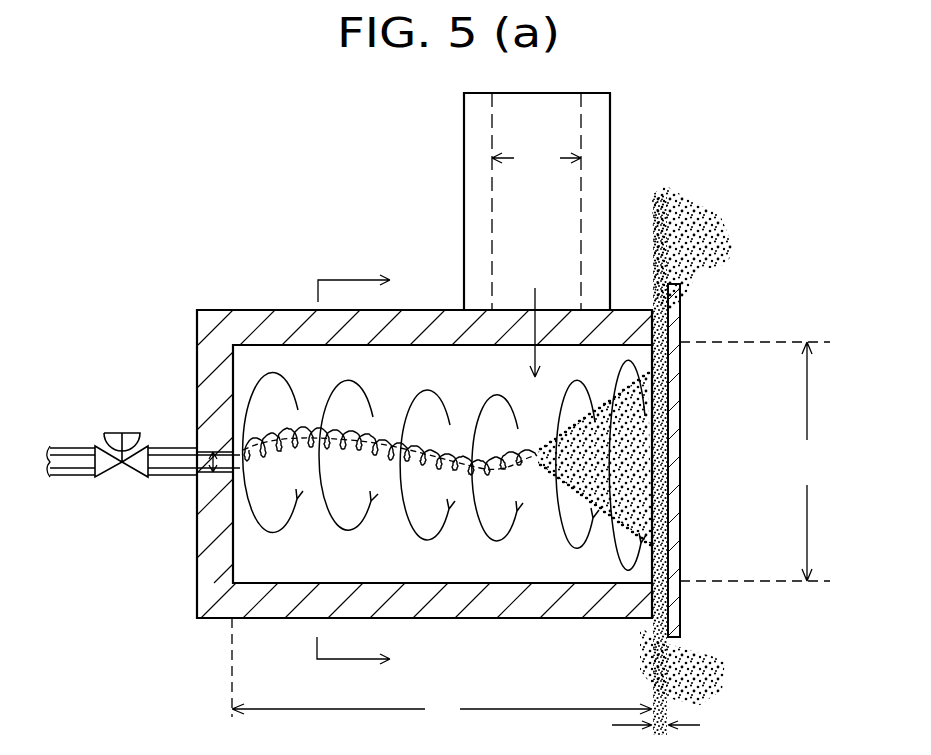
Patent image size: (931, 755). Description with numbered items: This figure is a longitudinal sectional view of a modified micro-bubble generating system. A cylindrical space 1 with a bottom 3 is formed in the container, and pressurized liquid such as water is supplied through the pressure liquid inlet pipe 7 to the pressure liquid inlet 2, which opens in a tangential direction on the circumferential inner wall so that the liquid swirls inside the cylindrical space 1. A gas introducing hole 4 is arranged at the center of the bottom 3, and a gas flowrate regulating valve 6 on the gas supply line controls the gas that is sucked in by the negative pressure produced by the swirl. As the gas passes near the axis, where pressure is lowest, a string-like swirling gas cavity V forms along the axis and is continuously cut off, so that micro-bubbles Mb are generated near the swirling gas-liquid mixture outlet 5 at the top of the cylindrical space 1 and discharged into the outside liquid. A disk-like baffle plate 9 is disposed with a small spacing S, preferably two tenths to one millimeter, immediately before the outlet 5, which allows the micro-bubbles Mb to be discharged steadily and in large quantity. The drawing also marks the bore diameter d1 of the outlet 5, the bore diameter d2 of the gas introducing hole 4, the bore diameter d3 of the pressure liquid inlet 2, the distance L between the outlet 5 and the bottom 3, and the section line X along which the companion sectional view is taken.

The cylindrical space 1 is at (269, 358).
The pressure liquid inlet 2 is at (560, 336).
The bottom of cylindrical space 3 is at (228, 565).
The gas introducing hole 4 is at (232, 472).
The swirling gas-liquid mixture outlet 5 is at (650, 384).
The gas flowrate regulating valve 6 is at (103, 478).
The pressure liquid inlet pipe 7 is at (466, 188).
The baffle plate 9 is at (682, 300).
The bore diameter of swirling gas-liquid mixture outlet d1 is at (755, 461).
The bore diameter of gas introducing hole d2 is at (212, 452).
The bore diameter of pressure liquid introducing hole d3 is at (536, 158).
The distance between swirling gas-liquid mixture outlet and bottom of cylindrical sp L is at (442, 672).
The small spacing S is at (656, 475).
The swirling gas cavity V is at (320, 430).
The section line X- X is at (365, 471).
The micro-bubbles Mb is at (680, 663).